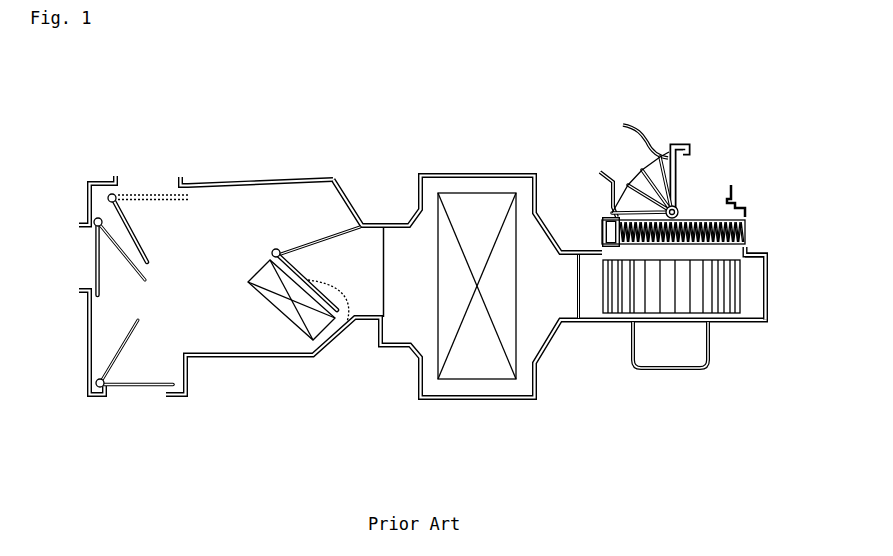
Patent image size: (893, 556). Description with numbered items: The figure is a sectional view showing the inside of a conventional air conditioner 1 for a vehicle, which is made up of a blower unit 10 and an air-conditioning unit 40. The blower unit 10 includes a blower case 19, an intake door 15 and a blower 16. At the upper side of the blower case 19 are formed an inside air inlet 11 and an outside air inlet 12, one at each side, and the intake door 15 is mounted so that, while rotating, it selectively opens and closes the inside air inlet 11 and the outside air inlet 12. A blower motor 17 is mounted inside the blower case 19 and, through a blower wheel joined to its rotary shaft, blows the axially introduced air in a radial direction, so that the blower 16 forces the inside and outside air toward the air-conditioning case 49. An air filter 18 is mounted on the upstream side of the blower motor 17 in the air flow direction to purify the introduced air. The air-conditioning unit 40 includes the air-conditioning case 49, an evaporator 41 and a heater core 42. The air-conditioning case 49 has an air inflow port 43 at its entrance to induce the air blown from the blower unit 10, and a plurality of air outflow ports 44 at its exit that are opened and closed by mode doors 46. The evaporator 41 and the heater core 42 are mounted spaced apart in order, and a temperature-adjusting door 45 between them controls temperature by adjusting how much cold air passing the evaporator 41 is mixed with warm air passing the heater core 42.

The air conditioner 1 is at (496, 110).
The blower unit 10 is at (680, 129).
The inside air inlet 11 is at (715, 155).
The outside air inlet 12 is at (617, 147).
The intake door 15 is at (668, 183).
The blower 16 is at (667, 302).
The blower motor 17 is at (690, 347).
The air filter 18 is at (745, 232).
The blower case 19 is at (767, 285).
The air-conditioning unit 40 is at (288, 167).
The evaporator 41 is at (505, 307).
The heater core 42 is at (278, 307).
The air inflow port 43 is at (568, 267).
The air outflow ports 44 is at (148, 183).
The temperature-adjusting door 45 is at (340, 330).
The mode doors 46 is at (193, 210).
The air-conditioning case 49 is at (312, 175).